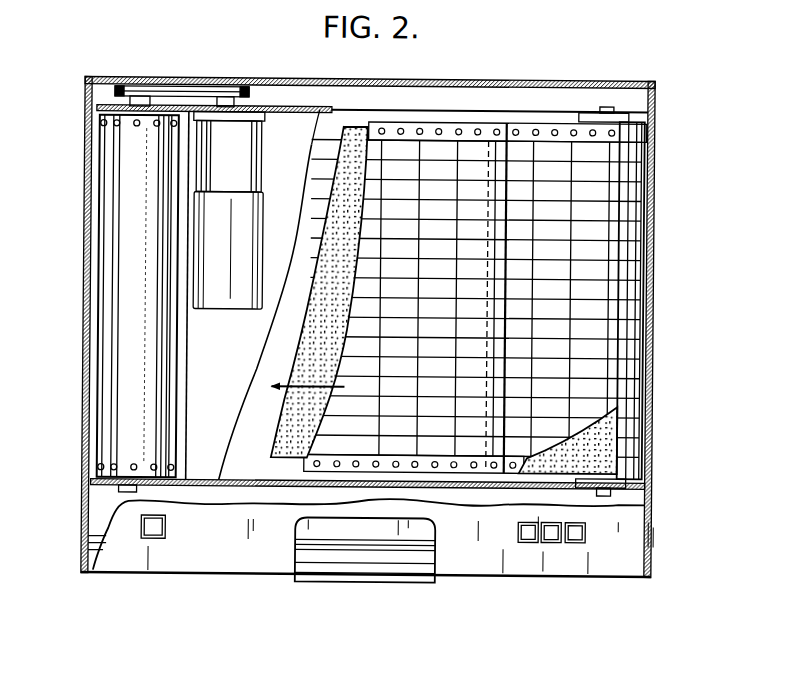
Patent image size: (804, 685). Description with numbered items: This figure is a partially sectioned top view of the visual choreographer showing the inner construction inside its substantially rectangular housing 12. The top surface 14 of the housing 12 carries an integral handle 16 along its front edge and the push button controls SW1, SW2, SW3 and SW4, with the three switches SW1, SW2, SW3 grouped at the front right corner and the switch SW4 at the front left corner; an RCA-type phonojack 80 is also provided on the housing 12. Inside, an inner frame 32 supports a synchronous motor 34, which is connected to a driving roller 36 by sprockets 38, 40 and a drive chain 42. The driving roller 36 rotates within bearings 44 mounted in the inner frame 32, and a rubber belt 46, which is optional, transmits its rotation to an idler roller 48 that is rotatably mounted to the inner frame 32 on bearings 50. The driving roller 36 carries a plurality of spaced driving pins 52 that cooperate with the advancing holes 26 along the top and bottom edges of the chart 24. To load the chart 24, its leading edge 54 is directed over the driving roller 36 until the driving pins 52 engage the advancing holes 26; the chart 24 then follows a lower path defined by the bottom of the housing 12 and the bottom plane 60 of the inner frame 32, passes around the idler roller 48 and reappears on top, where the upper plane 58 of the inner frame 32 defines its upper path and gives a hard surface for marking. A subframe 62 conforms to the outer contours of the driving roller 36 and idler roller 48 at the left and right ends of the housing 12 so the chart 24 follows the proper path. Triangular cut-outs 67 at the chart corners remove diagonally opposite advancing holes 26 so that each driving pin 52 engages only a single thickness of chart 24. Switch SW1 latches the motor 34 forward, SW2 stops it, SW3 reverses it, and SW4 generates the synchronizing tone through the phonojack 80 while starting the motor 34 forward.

The housing 12 is at (633, 74).
The top surface 14 is at (646, 556).
The handle 16 is at (371, 576).
The chart 24 is at (440, 146).
The advancing holes 26 is at (553, 127).
The inner frame 32 is at (318, 144).
The synchronous motor 34 is at (223, 294).
The driving roller 36 is at (110, 377).
The sprocket 38 is at (227, 88).
The sprocket 40 is at (121, 88).
The drive chain 42 is at (172, 88).
The bearings 44 is at (128, 490).
The rubber belt 46 is at (287, 419).
The idler roller 48 is at (628, 480).
The bearings 50 is at (604, 495).
The driving pins 52 is at (98, 127).
The leading edge 54 is at (487, 322).
The upper plane 58 is at (313, 172).
The bottom plane 60 is at (291, 125).
The subframe 62 is at (652, 451).
The triangular cut-outs 67 is at (520, 464).
The phonojack 80 is at (86, 543).
The push button switch SW1 is at (535, 546).
The push button switch SW2 is at (558, 546).
The push button switch SW3 is at (583, 545).
The push button switch SW4 is at (164, 541).